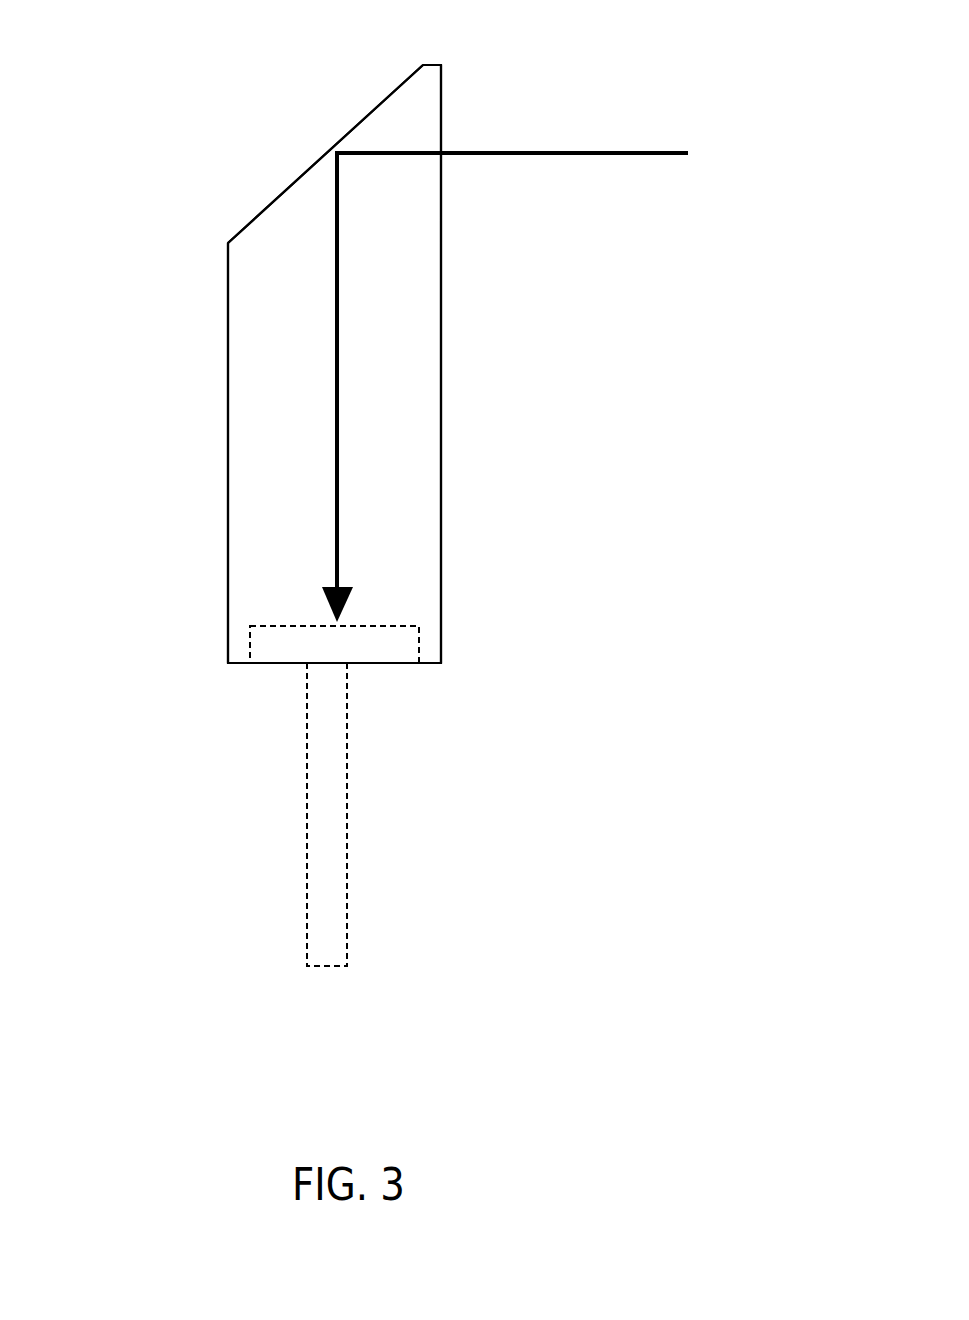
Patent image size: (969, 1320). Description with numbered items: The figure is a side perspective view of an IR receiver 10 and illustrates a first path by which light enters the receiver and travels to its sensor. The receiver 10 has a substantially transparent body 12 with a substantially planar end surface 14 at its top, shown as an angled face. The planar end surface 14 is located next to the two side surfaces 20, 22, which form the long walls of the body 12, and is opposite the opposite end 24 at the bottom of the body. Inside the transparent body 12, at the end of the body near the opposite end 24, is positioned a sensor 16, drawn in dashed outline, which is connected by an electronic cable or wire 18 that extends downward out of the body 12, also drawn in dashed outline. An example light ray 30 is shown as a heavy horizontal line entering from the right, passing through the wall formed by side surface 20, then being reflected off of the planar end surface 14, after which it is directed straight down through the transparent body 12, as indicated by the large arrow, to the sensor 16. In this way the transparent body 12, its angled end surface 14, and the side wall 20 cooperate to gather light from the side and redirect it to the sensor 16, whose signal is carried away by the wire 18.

The IR receiver 10 is at (515, 120).
The transparent body 12 is at (370, 415).
The planar end surface 14 is at (277, 198).
The sensor 16 is at (398, 643).
The electronic cable or wire 18 is at (322, 838).
The side surface 20 is at (440, 338).
The side surface 22 is at (228, 480).
The opposite end 24 is at (242, 663).
The light ray 30 is at (545, 153).